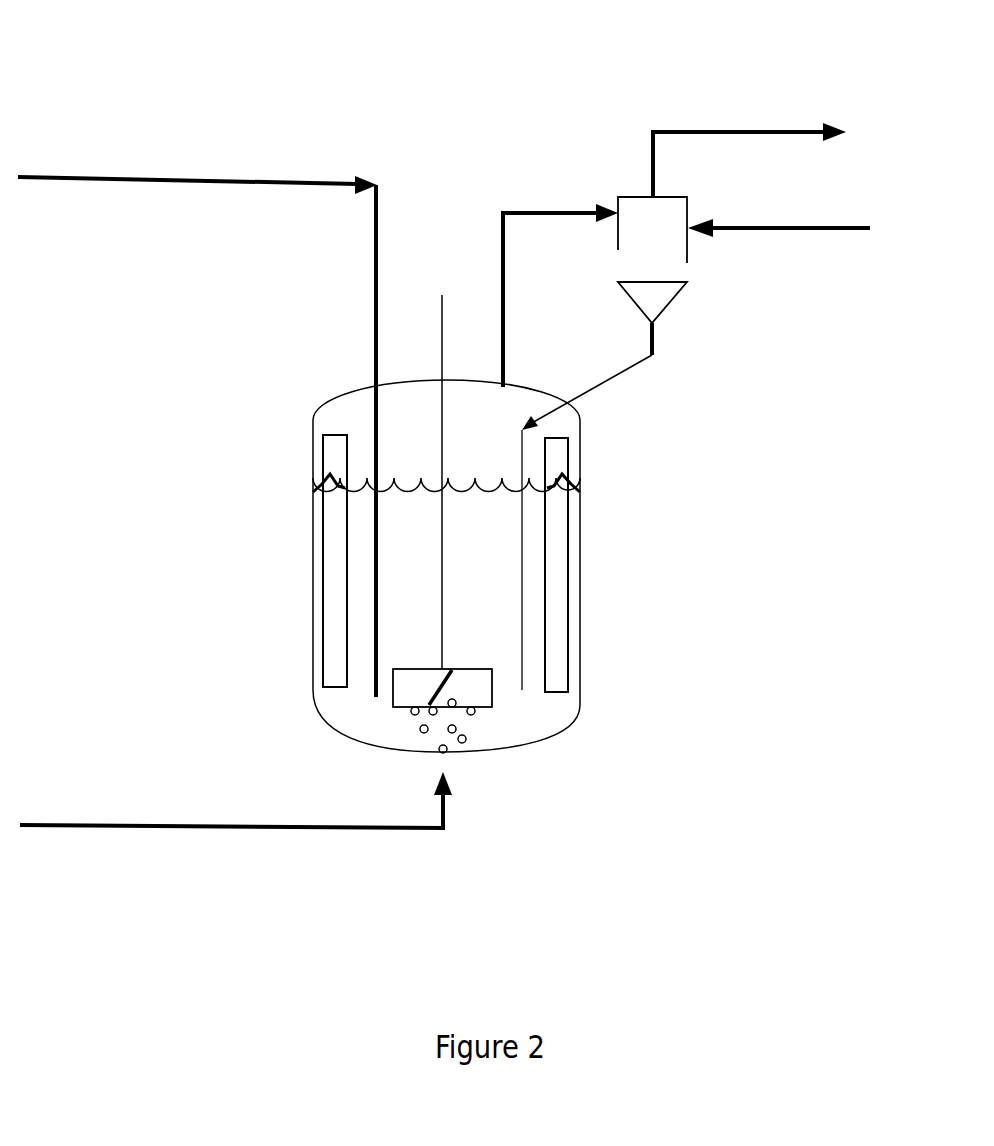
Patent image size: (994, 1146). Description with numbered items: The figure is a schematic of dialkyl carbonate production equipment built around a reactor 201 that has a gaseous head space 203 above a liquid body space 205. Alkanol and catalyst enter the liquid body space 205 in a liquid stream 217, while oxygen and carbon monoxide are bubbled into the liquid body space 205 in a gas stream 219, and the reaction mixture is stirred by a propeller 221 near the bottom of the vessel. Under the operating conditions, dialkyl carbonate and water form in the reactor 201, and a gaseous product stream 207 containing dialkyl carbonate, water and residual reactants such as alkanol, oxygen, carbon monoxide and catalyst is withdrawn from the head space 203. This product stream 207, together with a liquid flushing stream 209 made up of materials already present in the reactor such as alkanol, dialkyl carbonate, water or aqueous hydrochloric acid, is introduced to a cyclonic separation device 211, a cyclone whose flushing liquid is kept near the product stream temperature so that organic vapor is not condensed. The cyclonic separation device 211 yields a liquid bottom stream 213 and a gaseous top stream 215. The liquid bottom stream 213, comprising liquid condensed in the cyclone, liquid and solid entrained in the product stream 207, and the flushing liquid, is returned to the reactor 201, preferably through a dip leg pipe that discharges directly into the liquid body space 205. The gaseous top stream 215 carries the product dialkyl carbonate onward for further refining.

The reactor 201 is at (567, 720).
The gaseous head space 203 is at (405, 413).
The liquid body space 205 is at (408, 617).
The product stream 207 is at (542, 213).
The liquid flushing stream 209 is at (828, 228).
The cyclonic separation device 211 is at (685, 263).
The liquid bottom stream 213 is at (608, 380).
The gaseous top stream 215 is at (767, 132).
The liquid stream 217 is at (145, 178).
The gas stream 219 is at (102, 825).
The propeller 221 is at (483, 702).